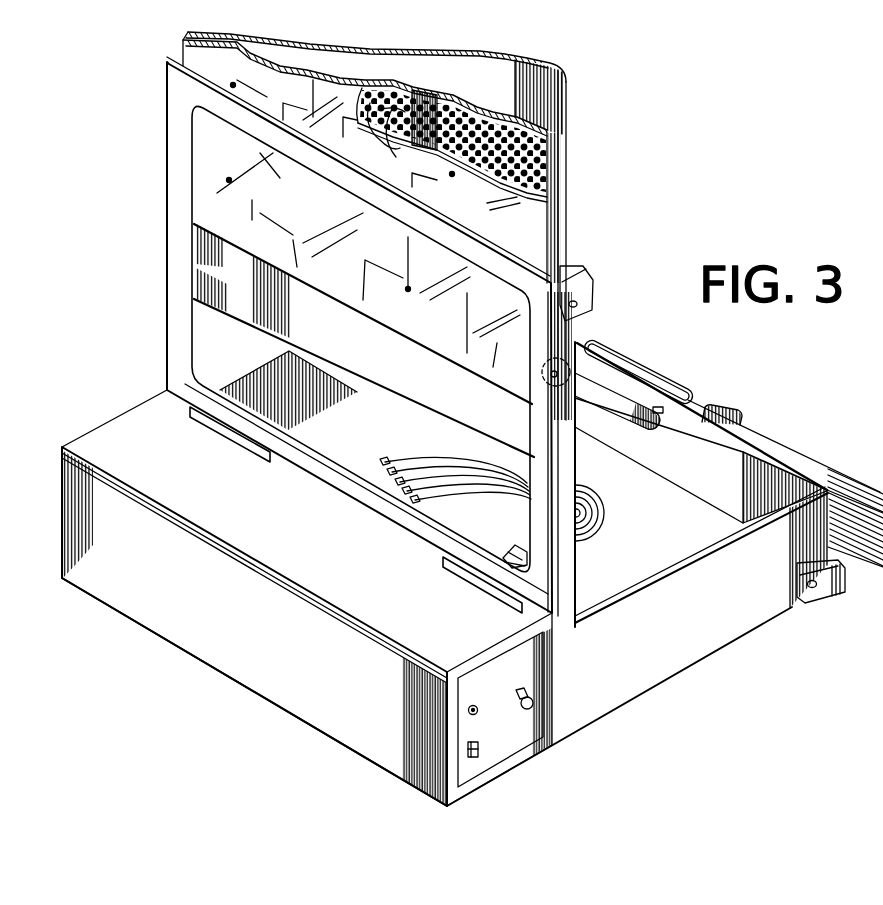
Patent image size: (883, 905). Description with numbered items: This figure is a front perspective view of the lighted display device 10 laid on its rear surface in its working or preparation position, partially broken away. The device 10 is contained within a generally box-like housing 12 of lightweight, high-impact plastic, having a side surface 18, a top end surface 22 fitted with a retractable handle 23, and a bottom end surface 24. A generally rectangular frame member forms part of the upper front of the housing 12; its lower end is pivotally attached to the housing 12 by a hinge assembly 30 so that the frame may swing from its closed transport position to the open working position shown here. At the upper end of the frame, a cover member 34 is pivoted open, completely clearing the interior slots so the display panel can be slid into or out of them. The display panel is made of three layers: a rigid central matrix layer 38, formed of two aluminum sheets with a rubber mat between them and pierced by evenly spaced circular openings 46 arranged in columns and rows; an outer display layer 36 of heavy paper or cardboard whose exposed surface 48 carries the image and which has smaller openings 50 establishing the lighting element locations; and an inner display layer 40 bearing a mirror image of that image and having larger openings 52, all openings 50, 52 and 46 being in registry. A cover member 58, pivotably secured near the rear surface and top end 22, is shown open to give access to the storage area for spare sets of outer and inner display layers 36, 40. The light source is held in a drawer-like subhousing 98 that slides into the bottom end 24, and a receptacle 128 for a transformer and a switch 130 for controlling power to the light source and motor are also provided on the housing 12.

The lighted display device 10 is at (702, 177).
The housing 12 is at (137, 410).
The side surface 18 is at (706, 640).
The top end surface 22 is at (722, 413).
The retractable handle 23 is at (633, 358).
The bottom end surface 24 is at (185, 622).
The hinge assembly 30 is at (230, 433).
The cover member 34 is at (597, 303).
The outer display layer 36 is at (572, 221).
The matrix layer 38 is at (553, 160).
The inner display layer 40 is at (541, 98).
The openings 46 is at (432, 100).
The exposed surface 48 is at (580, 256).
The openings 50 is at (233, 87).
The openings 52 is at (513, 107).
The cover member 58 is at (833, 600).
The subhousing 98 is at (500, 680).
The receptacle 128 is at (489, 738).
The switch 130 is at (467, 708).